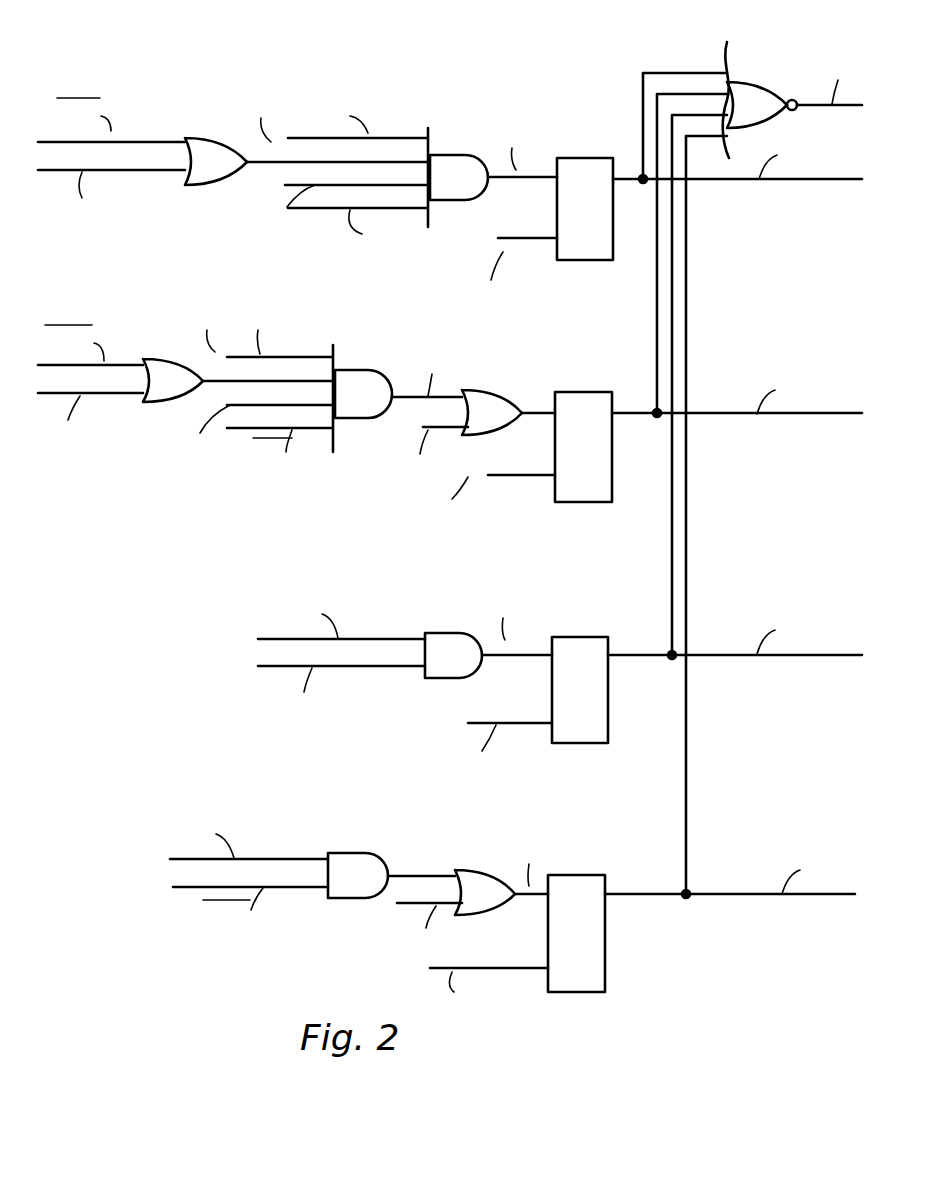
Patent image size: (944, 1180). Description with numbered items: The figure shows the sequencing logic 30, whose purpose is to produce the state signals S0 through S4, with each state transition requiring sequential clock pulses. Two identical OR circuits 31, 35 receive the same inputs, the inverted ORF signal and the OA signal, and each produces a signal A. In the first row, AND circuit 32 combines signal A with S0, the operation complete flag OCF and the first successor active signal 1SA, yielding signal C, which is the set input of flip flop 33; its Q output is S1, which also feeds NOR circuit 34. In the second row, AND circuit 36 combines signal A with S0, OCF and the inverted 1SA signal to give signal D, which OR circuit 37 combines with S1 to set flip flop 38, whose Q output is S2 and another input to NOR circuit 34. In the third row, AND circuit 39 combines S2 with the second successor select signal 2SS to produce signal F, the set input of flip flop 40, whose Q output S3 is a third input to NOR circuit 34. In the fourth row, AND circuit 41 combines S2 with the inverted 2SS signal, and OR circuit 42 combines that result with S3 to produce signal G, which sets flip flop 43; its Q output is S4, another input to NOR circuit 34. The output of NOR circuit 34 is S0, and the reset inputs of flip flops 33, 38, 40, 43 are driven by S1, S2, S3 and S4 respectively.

The sequencing logic 30 is at (450, 521).
The OR circuit 31 is at (211, 134).
The AND circuit 32 is at (456, 154).
The flip flop 33 is at (584, 156).
The NOR circuit 34 is at (746, 94).
The OR circuit 35 is at (162, 357).
The AND circuit 36 is at (355, 379).
The OR circuit 37 is at (478, 394).
The flip flop 38 is at (582, 398).
The AND circuit 39 is at (442, 632).
The flip flop 40 is at (578, 640).
The AND circuit 41 is at (352, 854).
The OR circuit 42 is at (464, 874).
The flip flop 43 is at (584, 876).